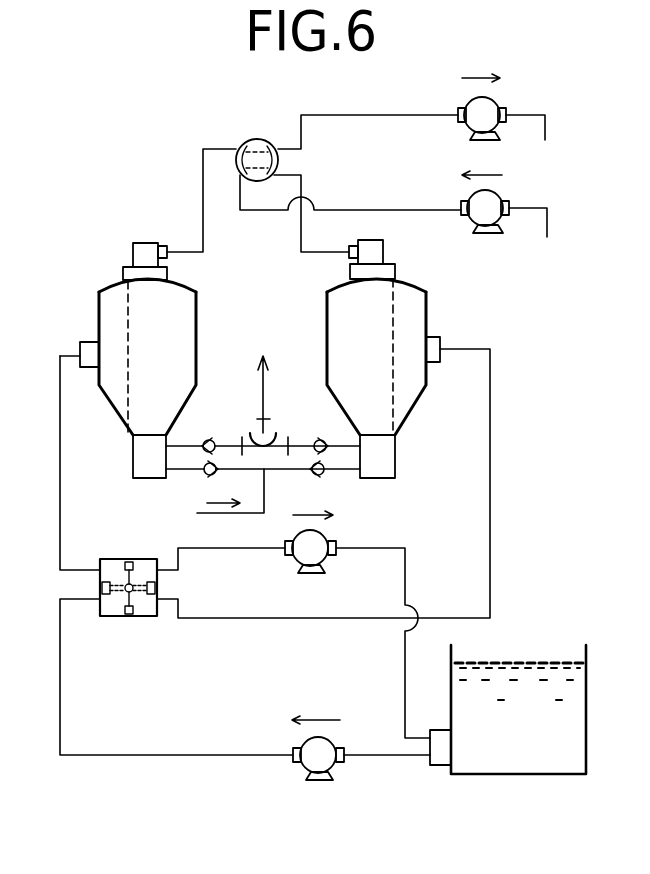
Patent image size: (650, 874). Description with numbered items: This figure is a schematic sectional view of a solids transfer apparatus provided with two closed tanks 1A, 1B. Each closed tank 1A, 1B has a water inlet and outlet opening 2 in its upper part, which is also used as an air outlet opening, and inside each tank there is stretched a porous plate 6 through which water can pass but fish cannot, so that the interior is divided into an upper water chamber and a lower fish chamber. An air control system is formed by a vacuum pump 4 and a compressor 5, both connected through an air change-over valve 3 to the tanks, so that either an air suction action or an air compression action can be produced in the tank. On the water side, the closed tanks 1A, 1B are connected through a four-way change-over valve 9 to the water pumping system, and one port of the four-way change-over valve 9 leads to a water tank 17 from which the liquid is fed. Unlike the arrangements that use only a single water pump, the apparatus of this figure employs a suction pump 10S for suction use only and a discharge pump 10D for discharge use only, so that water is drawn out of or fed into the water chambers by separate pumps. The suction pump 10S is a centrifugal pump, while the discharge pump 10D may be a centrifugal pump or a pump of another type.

The closed tank 1A is at (197, 349).
The closed tank 1B is at (326, 311).
The water inlet and outlet opening 2 is at (82, 347).
The air change-over valve 3 is at (258, 139).
The vacuum pump 4 is at (470, 104).
The compressor 5 is at (490, 198).
The porous plate 6 is at (128, 398).
The four-way change-over valve 9 is at (113, 607).
The suction pump 10S is at (312, 543).
The discharge pump 10D is at (322, 747).
The water tank 17 is at (500, 772).